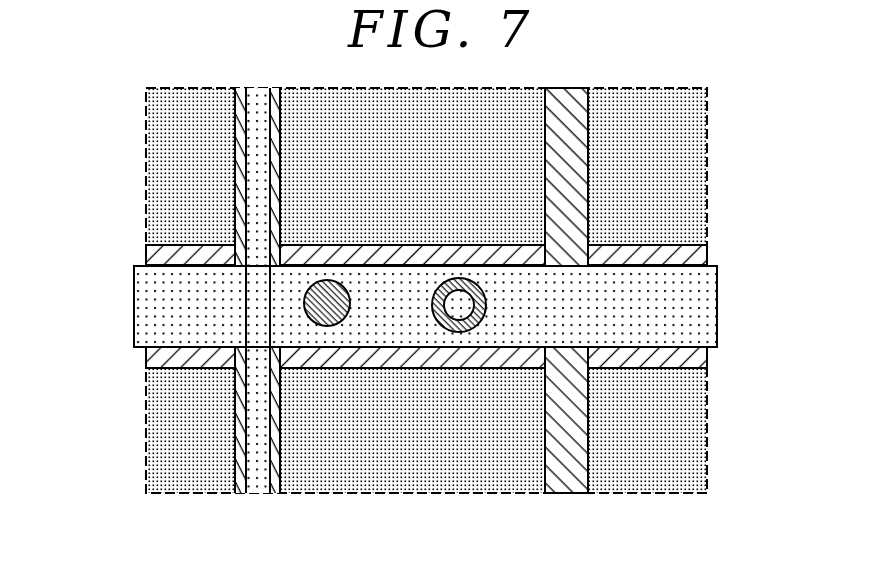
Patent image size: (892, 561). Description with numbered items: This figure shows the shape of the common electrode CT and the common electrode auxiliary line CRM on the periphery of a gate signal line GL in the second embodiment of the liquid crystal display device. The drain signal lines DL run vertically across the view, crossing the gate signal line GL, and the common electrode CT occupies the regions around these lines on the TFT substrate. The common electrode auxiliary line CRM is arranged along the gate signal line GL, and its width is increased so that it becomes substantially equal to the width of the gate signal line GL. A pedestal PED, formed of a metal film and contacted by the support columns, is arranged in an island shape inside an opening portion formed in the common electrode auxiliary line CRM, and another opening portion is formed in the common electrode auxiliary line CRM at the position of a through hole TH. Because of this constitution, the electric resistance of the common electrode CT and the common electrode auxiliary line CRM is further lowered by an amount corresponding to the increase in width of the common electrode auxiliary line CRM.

The common electrode CT is at (673, 128).
The drain signal line DL is at (235, 150).
The gate signal line GL is at (695, 257).
The common electrode auxiliary line CRM is at (702, 317).
The through hole TH is at (325, 322).
The pedestal PED is at (459, 310).